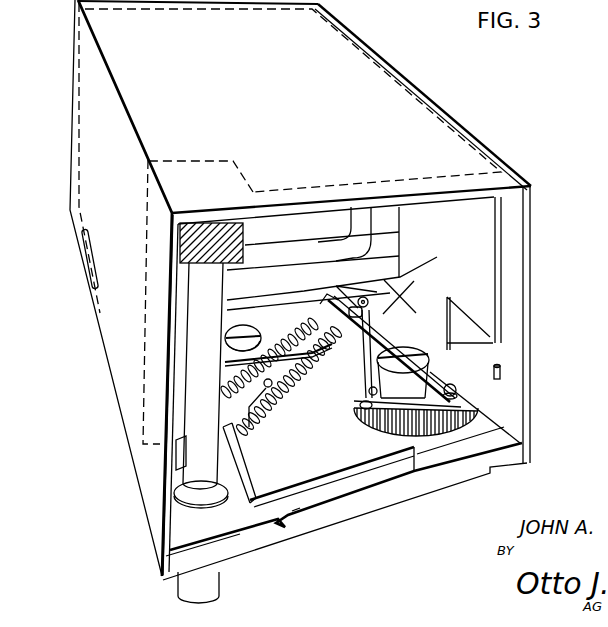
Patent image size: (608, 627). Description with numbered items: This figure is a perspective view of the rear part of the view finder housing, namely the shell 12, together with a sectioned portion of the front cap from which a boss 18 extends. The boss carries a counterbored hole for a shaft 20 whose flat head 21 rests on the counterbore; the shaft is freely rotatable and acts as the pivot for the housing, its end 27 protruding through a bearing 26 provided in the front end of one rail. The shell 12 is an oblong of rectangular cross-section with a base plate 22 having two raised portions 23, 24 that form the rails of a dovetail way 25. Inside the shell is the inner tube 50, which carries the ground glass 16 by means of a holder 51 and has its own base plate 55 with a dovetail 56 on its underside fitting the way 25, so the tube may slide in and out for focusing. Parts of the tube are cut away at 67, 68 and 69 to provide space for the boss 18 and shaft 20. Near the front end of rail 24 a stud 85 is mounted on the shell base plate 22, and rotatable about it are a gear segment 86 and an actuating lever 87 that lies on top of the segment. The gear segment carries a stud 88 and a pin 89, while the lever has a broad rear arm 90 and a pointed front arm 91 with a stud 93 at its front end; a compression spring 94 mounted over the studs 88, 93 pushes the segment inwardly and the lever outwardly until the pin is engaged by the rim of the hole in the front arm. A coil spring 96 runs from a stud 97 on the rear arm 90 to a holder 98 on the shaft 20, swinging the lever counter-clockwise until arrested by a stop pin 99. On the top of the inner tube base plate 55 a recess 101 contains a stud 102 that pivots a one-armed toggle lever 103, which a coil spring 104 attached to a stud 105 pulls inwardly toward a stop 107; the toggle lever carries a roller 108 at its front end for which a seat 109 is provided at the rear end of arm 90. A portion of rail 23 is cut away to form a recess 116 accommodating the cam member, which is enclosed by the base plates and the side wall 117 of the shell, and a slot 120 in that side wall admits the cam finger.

The shell 12 is at (467, 135).
The ground glass 16 is at (308, 240).
The boss 18 is at (243, 235).
The shaft 20 is at (187, 331).
The flat head 21 is at (182, 226).
The base plate 22 is at (414, 481).
The raised portion 23 is at (240, 530).
The raised portion 24 is at (464, 457).
The dovetail way 25 is at (324, 504).
The bearing 26 is at (193, 507).
The end of shaft 27 is at (178, 586).
The inner tube 50 is at (398, 78).
The holder 51 is at (311, 293).
The base plate 55 is at (437, 257).
The dovetail 56 is at (293, 510).
The cut-away 67 is at (237, 160).
The cut-away 68 is at (177, 451).
The cut-away 69 is at (493, 343).
The stud 85 is at (412, 310).
The gear segment 86 is at (444, 431).
The actuating lever 87 is at (357, 350).
The stud 88 is at (360, 405).
The pin 89 is at (476, 427).
The rear arm 90 is at (408, 308).
The front arm 91 is at (407, 437).
The stud 93 is at (460, 389).
The compression spring 94 is at (371, 390).
The coil spring 96 is at (307, 363).
The stud 97 is at (363, 320).
The holder 98 is at (462, 357).
The stop pin 99 is at (500, 372).
The recess 101 is at (288, 448).
The stud 102 is at (238, 325).
The toggle lever 103 is at (277, 303).
The coil spring 104 is at (232, 373).
The stud 105 is at (321, 304).
The stop 107 is at (256, 428).
The roller 108 is at (364, 297).
The seat 109 is at (392, 287).
The recess 116 is at (175, 474).
The side wall 117 is at (98, 103).
The slot 120 is at (90, 258).